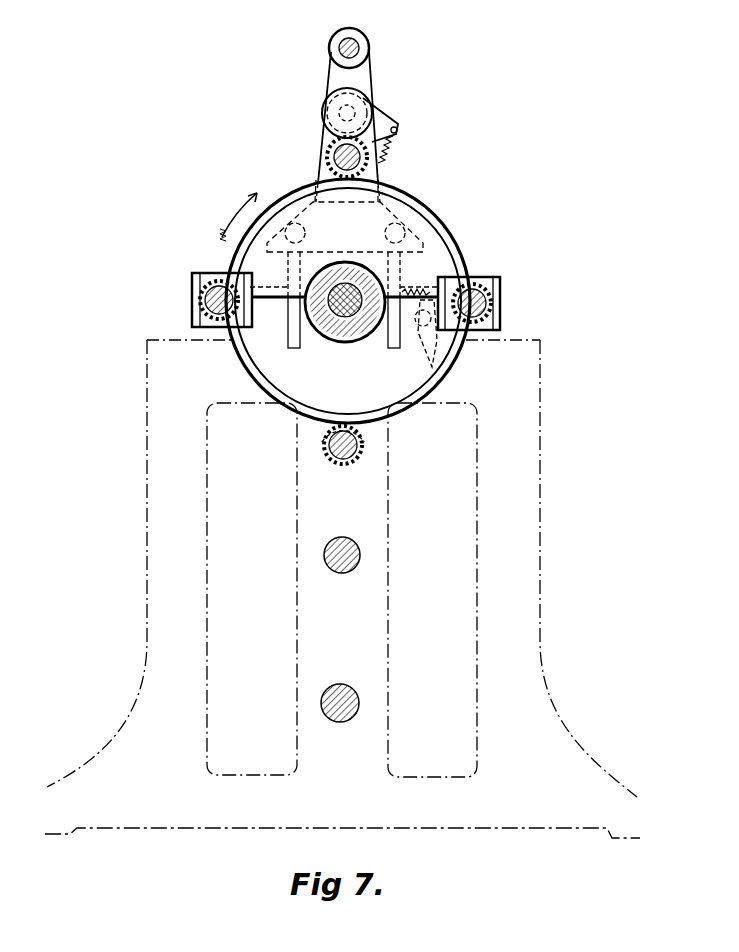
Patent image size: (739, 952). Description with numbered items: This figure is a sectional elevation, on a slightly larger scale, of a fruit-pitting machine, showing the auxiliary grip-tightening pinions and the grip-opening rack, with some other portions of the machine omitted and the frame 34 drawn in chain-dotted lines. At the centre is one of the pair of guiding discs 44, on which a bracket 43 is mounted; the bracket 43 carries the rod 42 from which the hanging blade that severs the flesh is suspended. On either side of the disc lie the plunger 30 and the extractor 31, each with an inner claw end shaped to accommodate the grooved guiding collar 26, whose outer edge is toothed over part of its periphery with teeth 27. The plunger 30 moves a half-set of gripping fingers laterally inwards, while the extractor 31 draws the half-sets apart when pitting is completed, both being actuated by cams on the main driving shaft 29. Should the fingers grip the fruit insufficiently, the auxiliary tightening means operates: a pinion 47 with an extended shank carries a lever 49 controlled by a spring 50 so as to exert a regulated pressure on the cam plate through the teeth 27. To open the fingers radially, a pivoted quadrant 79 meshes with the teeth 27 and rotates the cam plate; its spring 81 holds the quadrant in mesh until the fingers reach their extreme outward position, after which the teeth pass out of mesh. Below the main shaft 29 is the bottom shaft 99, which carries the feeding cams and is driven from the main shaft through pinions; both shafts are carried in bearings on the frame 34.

The grooved guiding collar 26 is at (338, 155).
The teeth 27 is at (338, 163).
The main driving shaft 29 is at (340, 555).
The plunger 30 is at (192, 297).
The extractor 31 is at (500, 305).
The frame 34 is at (523, 555).
The rod 42 is at (357, 44).
The bracket 43 is at (340, 80).
The guiding disc 44 is at (410, 232).
The pinion 47 is at (370, 100).
The lever 49 is at (382, 122).
The spring 50 is at (388, 152).
The pivoted quadrant 79 is at (450, 350).
The spring 81 is at (425, 281).
The bottom shaft 99 is at (338, 700).